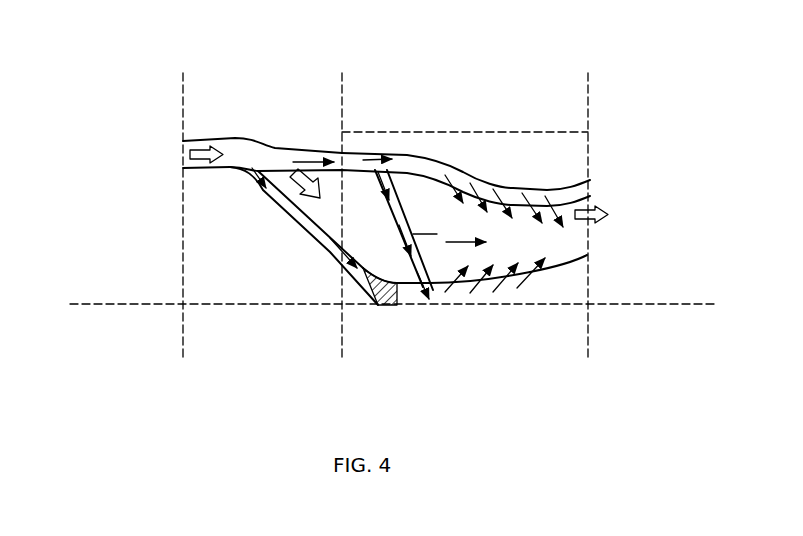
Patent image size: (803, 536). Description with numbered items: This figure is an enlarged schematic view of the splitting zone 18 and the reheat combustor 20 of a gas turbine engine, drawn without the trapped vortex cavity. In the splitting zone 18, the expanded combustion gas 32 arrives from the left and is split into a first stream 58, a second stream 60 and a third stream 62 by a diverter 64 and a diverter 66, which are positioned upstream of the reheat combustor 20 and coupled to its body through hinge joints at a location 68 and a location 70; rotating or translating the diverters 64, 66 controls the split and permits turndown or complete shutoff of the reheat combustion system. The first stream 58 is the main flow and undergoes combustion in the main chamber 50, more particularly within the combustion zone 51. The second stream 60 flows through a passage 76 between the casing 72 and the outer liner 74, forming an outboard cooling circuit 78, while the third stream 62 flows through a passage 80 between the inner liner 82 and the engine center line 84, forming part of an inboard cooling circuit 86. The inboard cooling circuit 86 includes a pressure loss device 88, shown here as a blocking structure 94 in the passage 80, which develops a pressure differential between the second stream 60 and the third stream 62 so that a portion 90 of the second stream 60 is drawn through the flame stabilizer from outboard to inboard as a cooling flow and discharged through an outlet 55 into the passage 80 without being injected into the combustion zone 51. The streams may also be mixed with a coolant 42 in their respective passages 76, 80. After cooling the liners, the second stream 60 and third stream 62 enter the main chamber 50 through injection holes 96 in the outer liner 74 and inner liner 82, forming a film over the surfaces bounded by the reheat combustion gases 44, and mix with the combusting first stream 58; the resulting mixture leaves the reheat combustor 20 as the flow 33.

The splitting zone 18 is at (250, 52).
The reheat combustor 20 is at (515, 52).
The expanded combustion gas 32 is at (213, 141).
The flow 33 is at (594, 206).
The coolant 42 is at (414, 156).
The reheat combustion gases 44 is at (461, 234).
The main chamber 50 is at (328, 205).
The combustion zone 51 is at (400, 229).
The outlet 55 is at (427, 302).
The first stream 58 is at (272, 147).
The second stream 60 is at (293, 167).
The third stream 62 is at (260, 186).
The diverter 64 is at (338, 157).
The diverter 66 is at (258, 168).
The location 68 is at (315, 172).
The location 70 is at (297, 204).
The casing 72 is at (557, 189).
The outer liner 74 is at (580, 197).
The passage 76 is at (463, 180).
The outboard cooling circuit 78 is at (366, 146).
The passage 80 is at (487, 292).
The inner liner 82 is at (578, 263).
The engine center line 84 is at (638, 305).
The inboard cooling circuit 86 is at (421, 322).
The pressure loss device 88 is at (388, 306).
The portion of the second stream 90 is at (379, 187).
The blocking structure 94 is at (371, 306).
The injection holes 96 is at (505, 195).